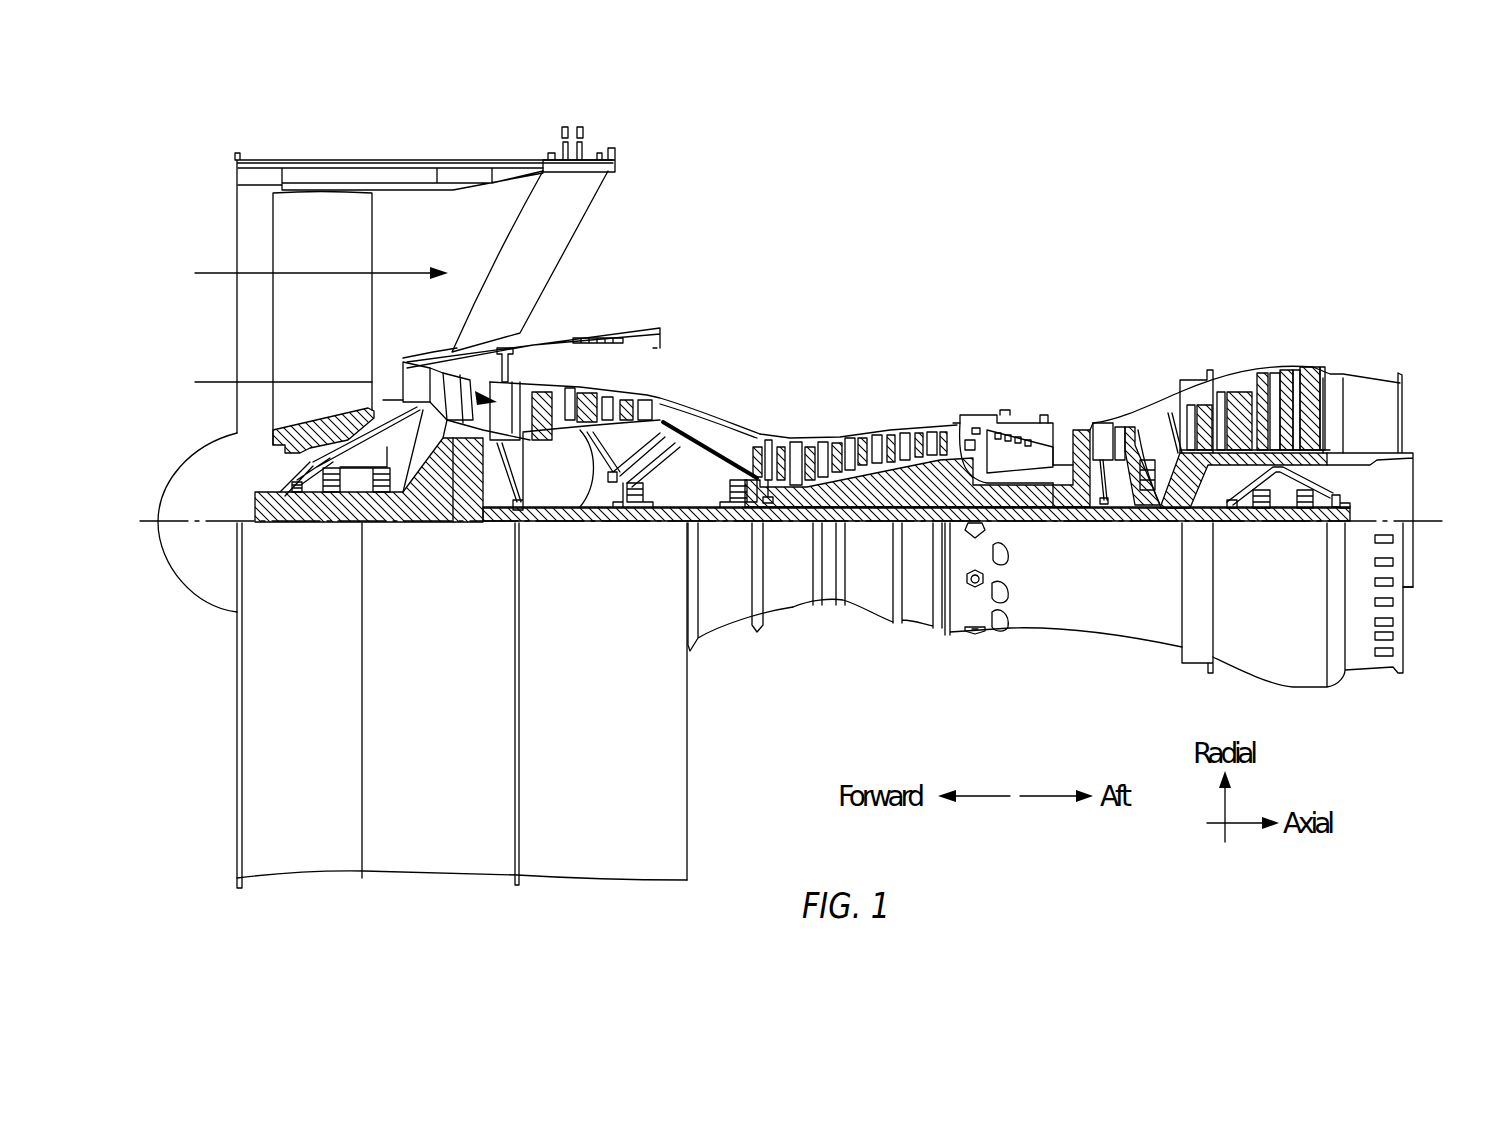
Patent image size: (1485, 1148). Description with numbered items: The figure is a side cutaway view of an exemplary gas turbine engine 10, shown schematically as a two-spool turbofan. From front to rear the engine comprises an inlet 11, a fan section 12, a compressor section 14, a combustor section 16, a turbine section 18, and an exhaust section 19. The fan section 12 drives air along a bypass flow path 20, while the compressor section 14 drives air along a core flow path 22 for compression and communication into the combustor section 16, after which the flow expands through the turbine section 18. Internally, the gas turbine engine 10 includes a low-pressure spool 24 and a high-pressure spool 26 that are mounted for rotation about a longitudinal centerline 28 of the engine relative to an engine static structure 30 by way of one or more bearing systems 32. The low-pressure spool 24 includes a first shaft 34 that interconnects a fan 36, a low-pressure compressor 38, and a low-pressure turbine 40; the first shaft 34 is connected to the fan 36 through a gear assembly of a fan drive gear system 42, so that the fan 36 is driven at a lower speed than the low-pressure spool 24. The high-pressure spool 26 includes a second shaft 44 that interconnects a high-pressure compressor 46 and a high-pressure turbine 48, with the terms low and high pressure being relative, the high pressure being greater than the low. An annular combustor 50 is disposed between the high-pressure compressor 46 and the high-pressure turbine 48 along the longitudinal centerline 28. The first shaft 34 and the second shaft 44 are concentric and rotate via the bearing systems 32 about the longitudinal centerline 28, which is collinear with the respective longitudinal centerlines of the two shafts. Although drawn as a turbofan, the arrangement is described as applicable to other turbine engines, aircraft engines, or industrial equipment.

The gas turbine engine 10 is at (1204, 177).
The inlet 11 is at (180, 392).
The fan section 12 is at (228, 138).
The compressor section 14 is at (525, 292).
The combustor section 16 is at (960, 292).
The turbine section 18 is at (1335, 292).
The exhaust section 19 is at (1338, 292).
The bypass flow path 20 is at (208, 271).
The core flow path 22 is at (208, 380).
The low-pressure spool 24 is at (880, 533).
The high-pressure spool 26 is at (843, 498).
The longitudinal centerline 28 is at (1436, 514).
The engine static structure 30 is at (936, 643).
The bearing systems 32 is at (1157, 497).
The first shaft 34 is at (700, 520).
The fan 36 is at (333, 319).
The low-pressure compressor 38 is at (603, 403).
The low-pressure turbine 40 is at (1266, 371).
The fan drive gear system 42 is at (466, 538).
The second shaft 44 is at (1058, 513).
The high-pressure compressor 46 is at (833, 432).
The high-pressure turbine 48 is at (1107, 425).
The annular combustor 50 is at (1021, 452).